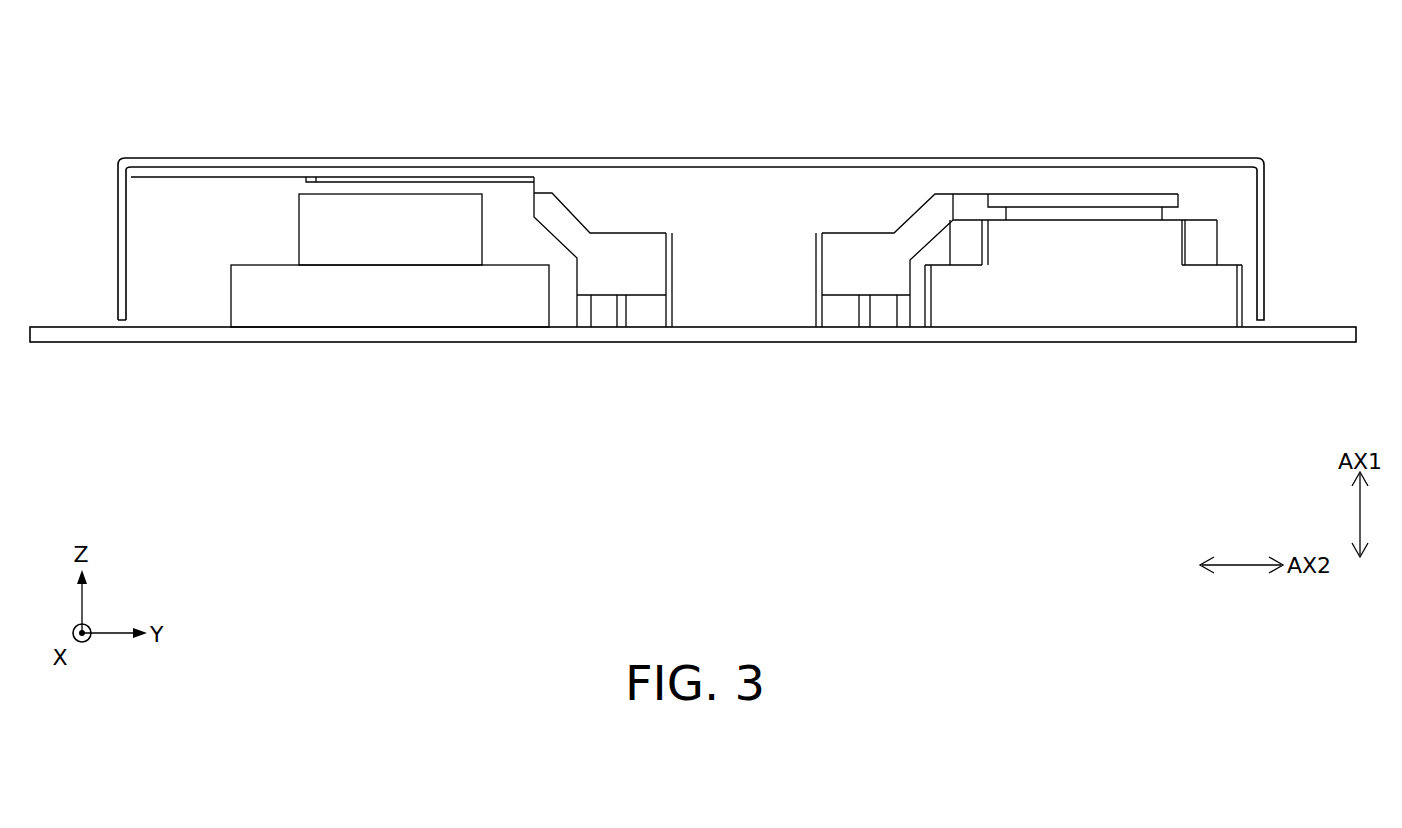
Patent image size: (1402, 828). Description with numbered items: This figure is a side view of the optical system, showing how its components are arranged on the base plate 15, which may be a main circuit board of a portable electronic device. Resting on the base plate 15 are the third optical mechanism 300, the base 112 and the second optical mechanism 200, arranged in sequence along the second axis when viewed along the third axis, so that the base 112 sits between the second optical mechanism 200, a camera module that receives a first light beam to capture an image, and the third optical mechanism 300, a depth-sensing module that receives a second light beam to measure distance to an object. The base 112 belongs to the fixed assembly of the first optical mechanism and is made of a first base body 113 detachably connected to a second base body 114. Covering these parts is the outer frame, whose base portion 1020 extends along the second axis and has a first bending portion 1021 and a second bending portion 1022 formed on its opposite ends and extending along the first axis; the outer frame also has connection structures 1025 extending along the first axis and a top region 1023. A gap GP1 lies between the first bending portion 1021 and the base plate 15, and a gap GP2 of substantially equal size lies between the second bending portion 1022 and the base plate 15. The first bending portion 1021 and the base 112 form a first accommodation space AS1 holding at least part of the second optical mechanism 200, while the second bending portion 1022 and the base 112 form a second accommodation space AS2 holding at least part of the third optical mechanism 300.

The base plate 15 is at (1211, 335).
The base portion 1020 is at (748, 163).
The first bending portion 1021 is at (1262, 270).
The second bending portion 1022 is at (125, 269).
The top wall 1023 is at (226, 176).
The connection structure 1025 is at (747, 305).
The base 112 is at (647, 330).
The first base body 113 is at (884, 270).
The second base body 114 is at (883, 317).
The second optical mechanism 200 is at (1083, 330).
The third optical mechanism 300 is at (392, 330).
The first accommodation space AS1 is at (1255, 236).
The second accommodation space AS2 is at (152, 234).
The gap GP1 is at (1266, 325).
The gap GP2 is at (117, 325).